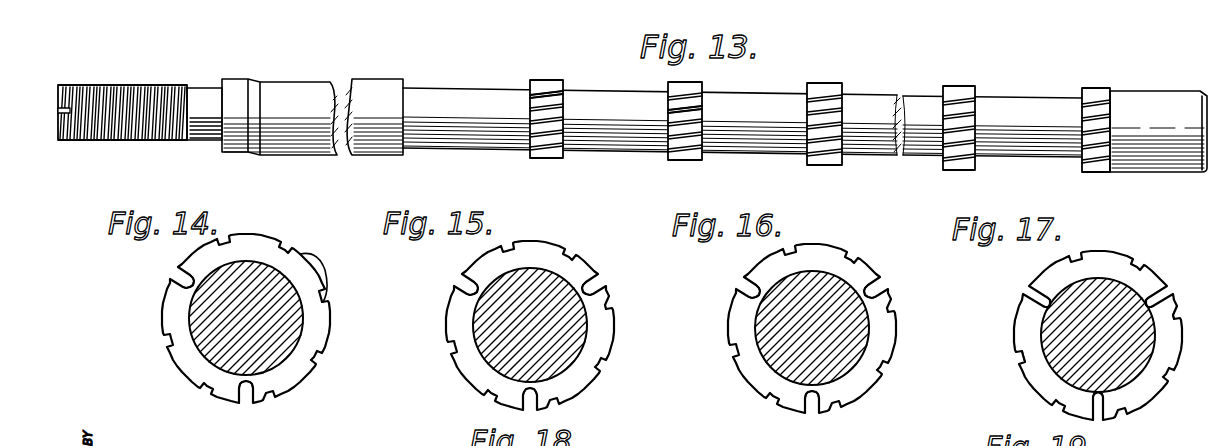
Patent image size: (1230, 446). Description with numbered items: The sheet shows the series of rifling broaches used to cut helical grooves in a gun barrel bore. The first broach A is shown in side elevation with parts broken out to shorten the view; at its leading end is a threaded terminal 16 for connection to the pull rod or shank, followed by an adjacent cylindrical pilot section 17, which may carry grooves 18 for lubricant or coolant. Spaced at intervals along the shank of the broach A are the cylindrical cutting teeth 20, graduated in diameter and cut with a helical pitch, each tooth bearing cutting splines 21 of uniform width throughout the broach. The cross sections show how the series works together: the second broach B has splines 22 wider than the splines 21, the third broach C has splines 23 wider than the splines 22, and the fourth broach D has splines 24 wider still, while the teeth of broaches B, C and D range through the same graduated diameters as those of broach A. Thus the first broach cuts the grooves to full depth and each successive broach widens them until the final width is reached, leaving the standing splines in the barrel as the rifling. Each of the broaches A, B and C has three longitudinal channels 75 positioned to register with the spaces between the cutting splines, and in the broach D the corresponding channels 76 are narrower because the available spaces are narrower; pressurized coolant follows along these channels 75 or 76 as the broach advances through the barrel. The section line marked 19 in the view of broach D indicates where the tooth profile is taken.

In FIG. 13, the threaded terminal 16 is at (150, 88).
In FIG. 13, the cylindrical pilot section 17 is at (285, 85).
In FIG. 13, the grooves 18 is at (308, 128).
In FIG. 13, the first broach A is at (425, 102).
In FIG. 14, the first broach A is at (280, 325).
In FIG. 13, the cutting teeth 20 is at (542, 158).
In FIG. 14, the cutting teeth 20 is at (168, 330).
In FIG. 15, the cutting teeth 20 is at (456, 336).
In FIG. 16, the cutting teeth 20 is at (764, 378).
In FIG. 17, the cutting teeth 20 is at (1025, 325).
In FIG. 13, the cutting splines 21 is at (690, 105).
In FIG. 14, the cutting splines 21 is at (306, 385).
In FIG. 15, the splines 22 is at (580, 258).
In FIG. 16, the splines 23 is at (895, 360).
In FIG. 17, the splines 24 is at (1026, 364).
In FIG. 13, the channels 75 is at (553, 100).
In FIG. 14, the channels 75 is at (188, 280).
In FIG. 15, the channels 75 is at (470, 286).
In FIG. 16, the channels 75 is at (755, 292).
In FIG. 17, the channels 76 is at (1043, 298).
In FIG. 15, the second broach B is at (570, 340).
In FIG. 16, the third broach C is at (850, 330).
In FIG. 17, the fourth broach D is at (1120, 292).
In FIG. 17, the section line 19 is at (1043, 419).